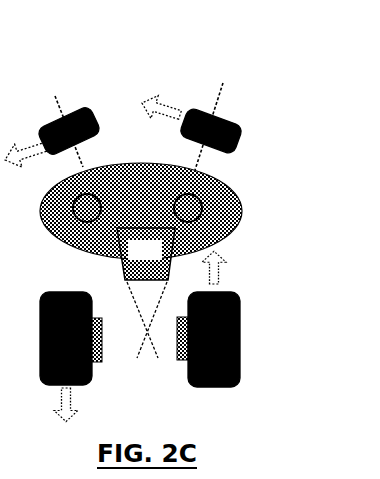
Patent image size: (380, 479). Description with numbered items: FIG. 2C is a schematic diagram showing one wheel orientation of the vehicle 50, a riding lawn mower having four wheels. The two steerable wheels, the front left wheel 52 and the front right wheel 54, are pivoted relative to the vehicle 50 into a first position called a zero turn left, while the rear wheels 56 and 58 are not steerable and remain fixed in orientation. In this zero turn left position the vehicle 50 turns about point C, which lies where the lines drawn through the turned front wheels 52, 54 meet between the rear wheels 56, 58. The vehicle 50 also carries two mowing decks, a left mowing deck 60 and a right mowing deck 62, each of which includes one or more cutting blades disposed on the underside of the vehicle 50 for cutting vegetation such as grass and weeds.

The vehicle 50 is at (128, 48).
The front left wheel 52 is at (67, 110).
The front right wheel 54 is at (218, 118).
The rear wheel 56 is at (78, 298).
The rear wheel 58 is at (218, 388).
The left mowing deck 60 is at (118, 243).
The right mowing deck 62 is at (214, 243).
The point C is at (140, 348).